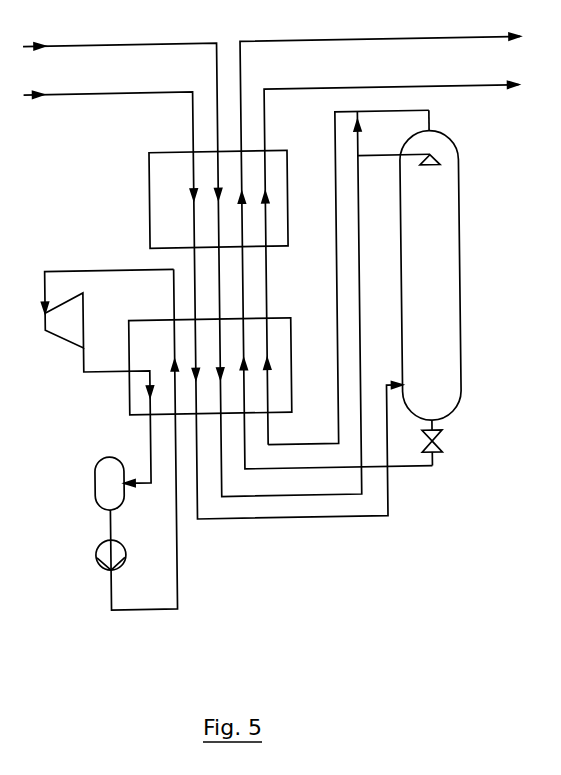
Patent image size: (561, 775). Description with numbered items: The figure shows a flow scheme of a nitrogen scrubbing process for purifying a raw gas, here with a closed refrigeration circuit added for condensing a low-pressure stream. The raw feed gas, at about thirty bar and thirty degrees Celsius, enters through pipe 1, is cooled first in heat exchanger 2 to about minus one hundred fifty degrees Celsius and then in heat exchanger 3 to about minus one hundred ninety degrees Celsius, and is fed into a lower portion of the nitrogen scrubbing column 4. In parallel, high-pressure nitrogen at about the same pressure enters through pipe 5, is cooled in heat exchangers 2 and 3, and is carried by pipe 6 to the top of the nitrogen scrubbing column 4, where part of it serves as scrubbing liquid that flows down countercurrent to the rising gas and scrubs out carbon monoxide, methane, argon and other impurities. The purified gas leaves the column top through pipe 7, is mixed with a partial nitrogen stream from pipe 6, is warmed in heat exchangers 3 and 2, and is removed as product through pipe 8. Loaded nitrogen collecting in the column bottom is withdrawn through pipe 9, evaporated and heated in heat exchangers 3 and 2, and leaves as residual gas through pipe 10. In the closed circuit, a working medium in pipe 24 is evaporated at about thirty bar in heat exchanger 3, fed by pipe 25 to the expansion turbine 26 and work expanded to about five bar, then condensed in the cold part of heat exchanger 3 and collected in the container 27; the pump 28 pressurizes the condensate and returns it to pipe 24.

The pipe 1 is at (80, 90).
The heat exchanger 2 is at (151, 196).
The heat exchanger 3 is at (128, 396).
The nitrogen scrubbing column 4 is at (461, 292).
The pipe 5 is at (82, 42).
The pipe 6 is at (360, 274).
The pipe 7 is at (432, 124).
The pipe 8 is at (464, 88).
The pipe 9 is at (435, 464).
The pipe 10 is at (459, 40).
The pipe 24 is at (175, 548).
The pipe 25 is at (78, 268).
The expansion turbine 26 is at (64, 340).
The container 27 is at (93, 479).
The pump 28 is at (95, 555).